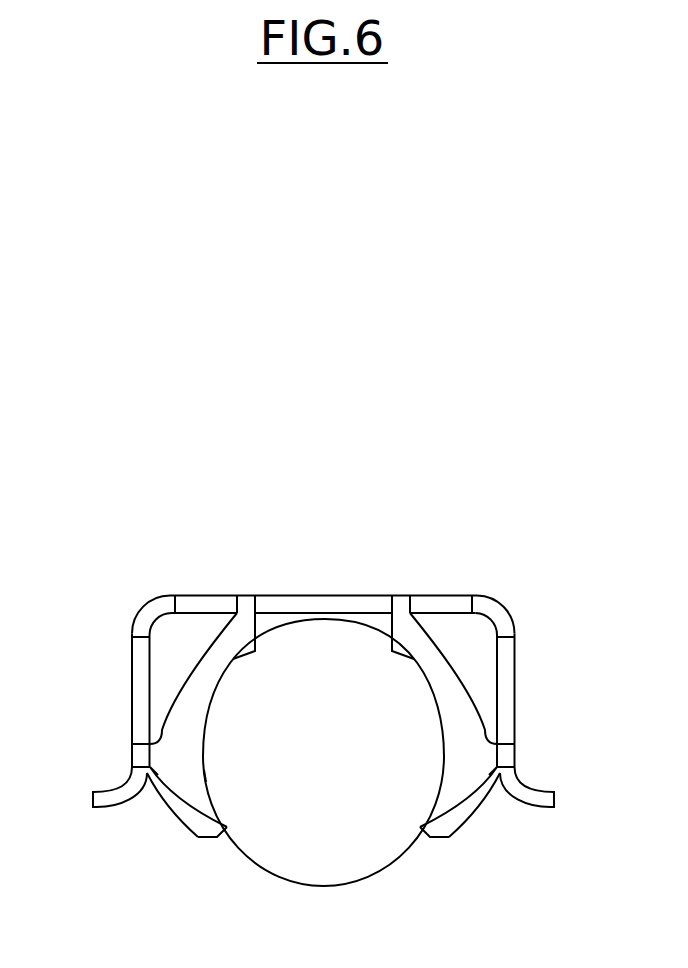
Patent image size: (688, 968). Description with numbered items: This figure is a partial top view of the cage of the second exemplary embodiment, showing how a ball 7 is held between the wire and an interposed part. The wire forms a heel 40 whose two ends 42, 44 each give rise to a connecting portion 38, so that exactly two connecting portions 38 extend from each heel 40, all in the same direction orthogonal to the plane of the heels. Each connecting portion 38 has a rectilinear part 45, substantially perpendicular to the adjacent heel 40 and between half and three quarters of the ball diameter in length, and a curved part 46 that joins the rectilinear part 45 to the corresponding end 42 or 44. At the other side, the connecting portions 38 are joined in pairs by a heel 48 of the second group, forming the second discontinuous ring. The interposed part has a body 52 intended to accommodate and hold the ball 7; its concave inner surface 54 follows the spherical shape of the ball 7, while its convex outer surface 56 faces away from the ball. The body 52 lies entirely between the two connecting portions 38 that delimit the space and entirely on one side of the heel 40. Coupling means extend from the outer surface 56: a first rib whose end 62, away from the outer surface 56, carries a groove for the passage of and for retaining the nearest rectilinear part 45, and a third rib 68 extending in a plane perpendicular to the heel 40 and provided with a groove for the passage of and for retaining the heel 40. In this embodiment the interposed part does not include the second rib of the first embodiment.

The ball 7 is at (337, 868).
The connecting portion 38 is at (131, 690).
The heel 40 is at (345, 600).
The end 42 is at (184, 597).
The end 44 is at (464, 597).
The rectilinear part 45 is at (505, 680).
The curved part 46 is at (509, 616).
The heel 48 is at (92, 806).
The body 52 is at (198, 803).
The concave inner surface 54 is at (207, 777).
The convex outer surface 56 is at (172, 804).
The end 62 is at (135, 748).
The third rib 68 is at (246, 602).